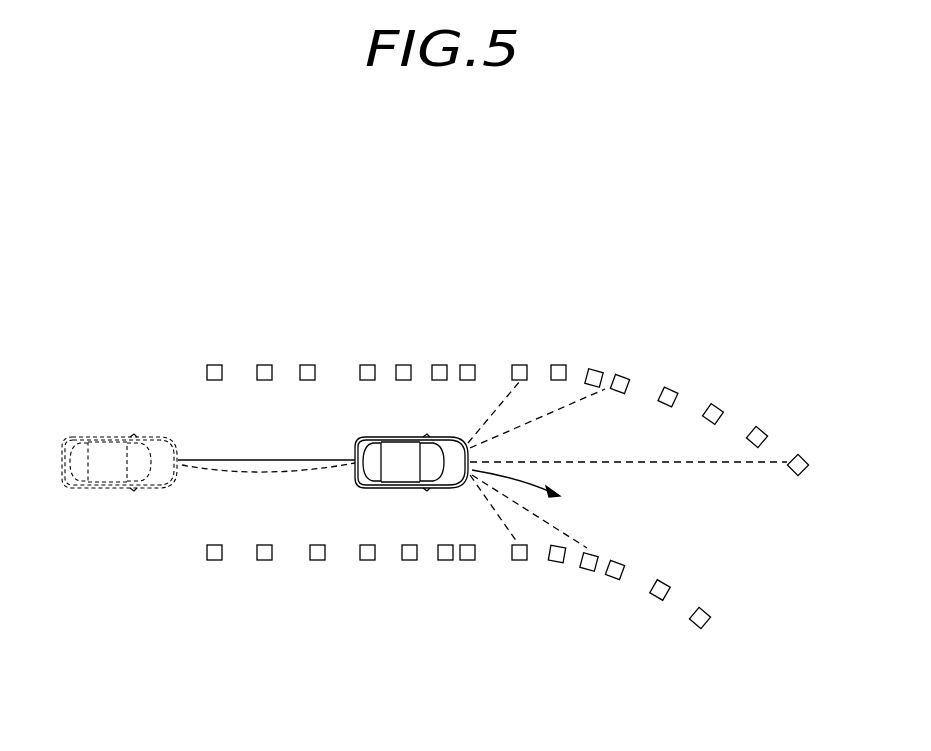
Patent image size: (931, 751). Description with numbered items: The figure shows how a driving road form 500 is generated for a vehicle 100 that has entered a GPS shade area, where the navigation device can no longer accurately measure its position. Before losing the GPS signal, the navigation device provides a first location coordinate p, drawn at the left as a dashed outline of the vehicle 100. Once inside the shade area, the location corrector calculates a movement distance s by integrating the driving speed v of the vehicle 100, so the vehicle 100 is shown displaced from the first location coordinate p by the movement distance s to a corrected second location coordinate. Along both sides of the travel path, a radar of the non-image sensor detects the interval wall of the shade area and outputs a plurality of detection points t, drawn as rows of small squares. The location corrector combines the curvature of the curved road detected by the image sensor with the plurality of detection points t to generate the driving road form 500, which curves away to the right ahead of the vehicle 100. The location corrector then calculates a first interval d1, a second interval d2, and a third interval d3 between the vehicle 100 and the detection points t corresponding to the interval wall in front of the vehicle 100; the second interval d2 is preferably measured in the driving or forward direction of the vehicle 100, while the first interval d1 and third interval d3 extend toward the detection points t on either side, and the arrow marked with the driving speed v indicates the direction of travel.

The vehicle 100 is at (402, 488).
The driving road form 500 is at (508, 450).
The first location coordinate p is at (119, 462).
The movement distance s is at (266, 470).
The detection points t is at (266, 463).
The first interval d1 is at (530, 414).
The second interval d2 is at (628, 451).
The third interval d3 is at (521, 511).
The driving speed v is at (523, 488).